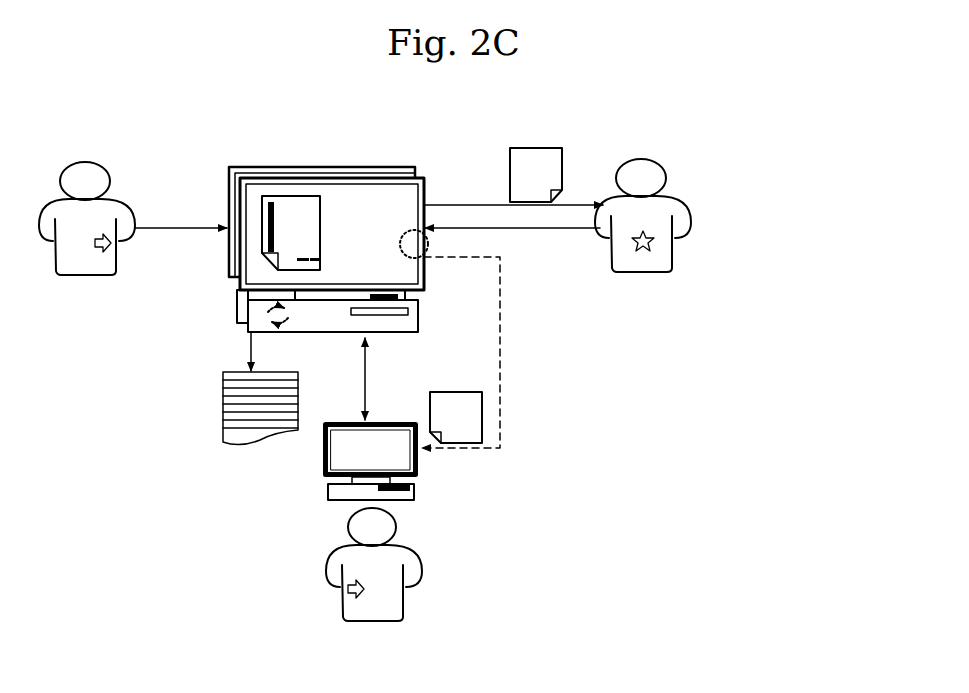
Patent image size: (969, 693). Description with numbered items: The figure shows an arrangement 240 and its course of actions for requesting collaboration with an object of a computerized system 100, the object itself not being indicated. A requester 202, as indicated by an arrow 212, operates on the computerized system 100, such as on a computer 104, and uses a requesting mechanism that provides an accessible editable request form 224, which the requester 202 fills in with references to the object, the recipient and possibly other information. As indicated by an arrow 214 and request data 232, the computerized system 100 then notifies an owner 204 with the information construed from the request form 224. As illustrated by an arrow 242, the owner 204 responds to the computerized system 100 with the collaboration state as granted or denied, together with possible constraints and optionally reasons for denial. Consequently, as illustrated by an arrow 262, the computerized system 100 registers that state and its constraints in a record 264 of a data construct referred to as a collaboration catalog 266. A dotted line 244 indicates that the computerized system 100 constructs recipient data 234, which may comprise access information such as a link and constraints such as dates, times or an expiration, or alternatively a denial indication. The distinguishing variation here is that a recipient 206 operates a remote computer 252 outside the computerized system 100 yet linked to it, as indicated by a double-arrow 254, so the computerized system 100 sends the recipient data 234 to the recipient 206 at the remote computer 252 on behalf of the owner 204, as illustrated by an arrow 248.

The computerized system 100 is at (297, 256).
The computer 104 is at (228, 248).
The requester 202 is at (83, 276).
The owner 204 is at (642, 273).
The recipient 206 is at (371, 624).
The arrow 212 is at (183, 223).
The arrow 214 is at (463, 205).
The request form 224 is at (320, 250).
The request data 232 is at (564, 158).
The recipient data 234 is at (458, 392).
The arrangement 240 is at (724, 138).
The arrow 242 is at (535, 232).
The dotted line 244 is at (400, 242).
The arrow 248 is at (505, 338).
The remote computer 252 is at (418, 487).
The double-arrow 254 is at (370, 368).
The arrow 262 is at (253, 343).
The record 264 is at (222, 386).
The collaboration catalog 266 is at (228, 431).